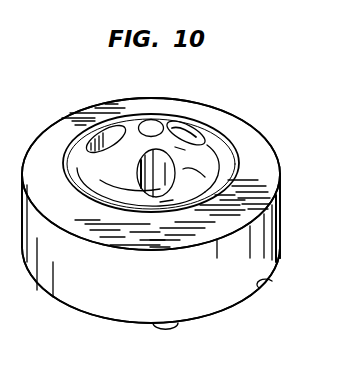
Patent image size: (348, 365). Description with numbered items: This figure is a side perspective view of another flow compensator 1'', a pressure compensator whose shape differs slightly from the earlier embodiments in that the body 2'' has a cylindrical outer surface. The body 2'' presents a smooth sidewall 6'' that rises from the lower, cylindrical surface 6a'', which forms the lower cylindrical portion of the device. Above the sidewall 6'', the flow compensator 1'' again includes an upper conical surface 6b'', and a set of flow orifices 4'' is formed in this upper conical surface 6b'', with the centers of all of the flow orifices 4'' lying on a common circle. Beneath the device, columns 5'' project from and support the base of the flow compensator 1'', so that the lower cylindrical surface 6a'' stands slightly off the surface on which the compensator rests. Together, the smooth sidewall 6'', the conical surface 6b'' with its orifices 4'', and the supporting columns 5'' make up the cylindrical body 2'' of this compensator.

The flow compensator 1'' is at (153, 189).
The body 2'' is at (199, 175).
The flow orifices 4'' is at (103, 121).
The columns 5'' is at (280, 295).
The smooth sidewall 6'' is at (167, 210).
The lower cylindrical surface 6a'' is at (203, 332).
The upper conical surface 6b'' is at (177, 158).